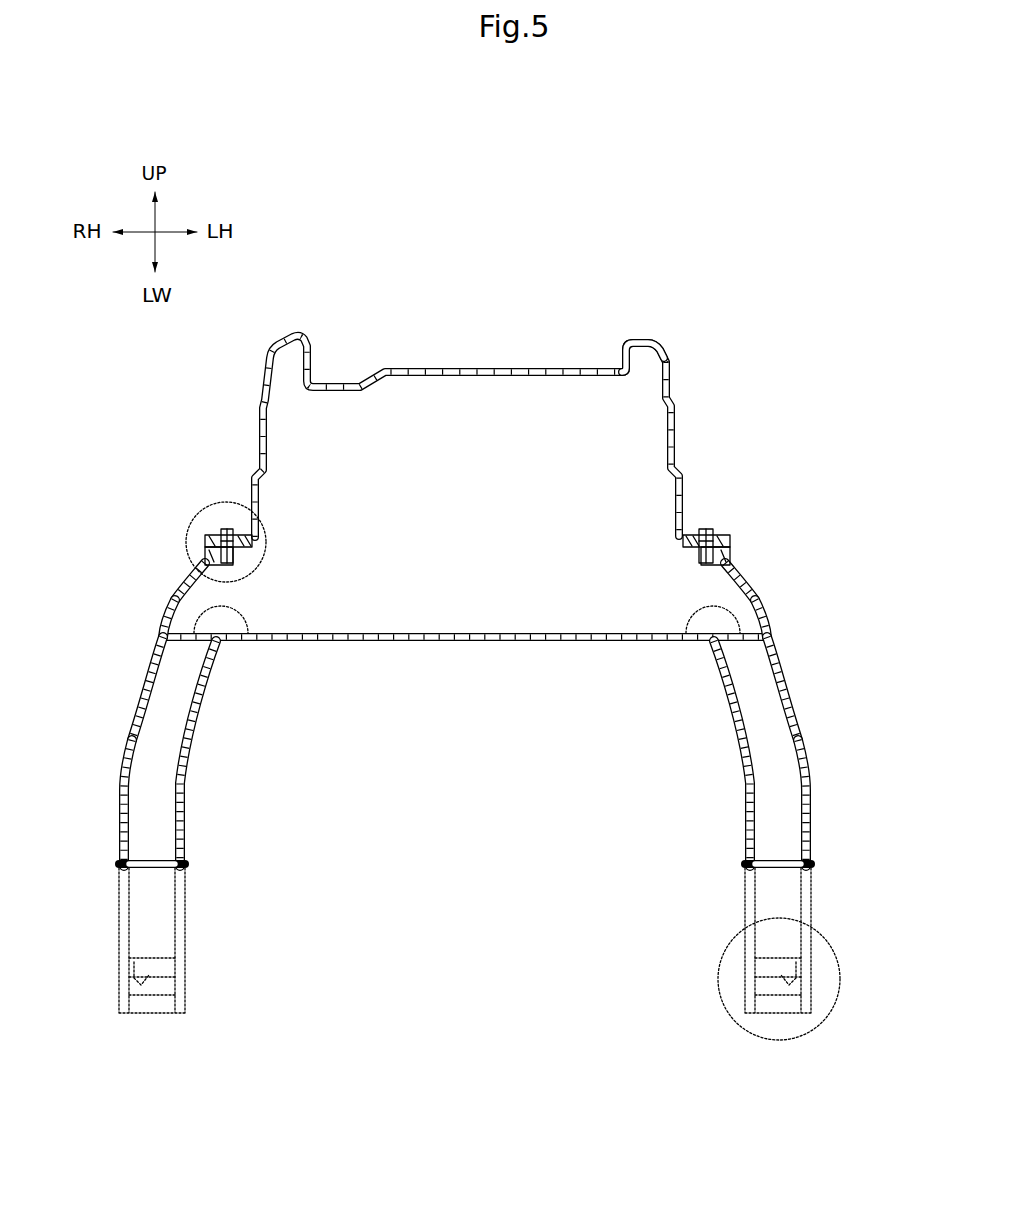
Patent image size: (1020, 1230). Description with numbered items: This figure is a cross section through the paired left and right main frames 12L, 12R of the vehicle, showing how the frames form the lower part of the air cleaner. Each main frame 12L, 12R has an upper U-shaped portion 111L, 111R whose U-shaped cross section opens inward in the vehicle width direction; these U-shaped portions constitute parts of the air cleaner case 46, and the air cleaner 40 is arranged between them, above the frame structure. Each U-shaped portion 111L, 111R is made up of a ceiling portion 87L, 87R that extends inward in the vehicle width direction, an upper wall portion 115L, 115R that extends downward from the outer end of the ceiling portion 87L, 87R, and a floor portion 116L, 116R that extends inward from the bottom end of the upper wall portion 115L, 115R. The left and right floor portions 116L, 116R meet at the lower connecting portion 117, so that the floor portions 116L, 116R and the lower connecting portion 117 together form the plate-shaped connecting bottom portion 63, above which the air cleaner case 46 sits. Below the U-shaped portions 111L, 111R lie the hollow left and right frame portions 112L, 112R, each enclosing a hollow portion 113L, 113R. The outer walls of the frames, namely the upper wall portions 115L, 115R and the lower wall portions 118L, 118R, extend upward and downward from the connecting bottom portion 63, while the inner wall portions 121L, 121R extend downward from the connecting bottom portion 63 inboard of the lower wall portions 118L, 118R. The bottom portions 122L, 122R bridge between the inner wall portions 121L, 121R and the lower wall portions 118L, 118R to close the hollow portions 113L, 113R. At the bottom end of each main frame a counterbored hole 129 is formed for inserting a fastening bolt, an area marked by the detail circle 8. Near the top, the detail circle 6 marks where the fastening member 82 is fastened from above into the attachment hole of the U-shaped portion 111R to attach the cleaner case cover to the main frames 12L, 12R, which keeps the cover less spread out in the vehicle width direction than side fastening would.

The air cleaner 40 is at (646, 334).
The air cleaner case 46 is at (657, 344).
The fastening member 82 is at (229, 528).
The right ceiling portion 87R is at (226, 534).
The left ceiling portion 87L is at (714, 534).
The detail circle of FIG. 6 is at (200, 522).
The detail circle of FIG. 8 is at (807, 1032).
The right U-shaped portion 111R is at (200, 575).
The left U-shaped portion 111L is at (733, 575).
The right upper wall portion 115R is at (148, 585).
The left upper wall portion 115L is at (782, 587).
The right main frame 12R is at (168, 773).
The left main frame 12L is at (761, 775).
The right frame portion 112R is at (152, 690).
The left frame portion 112L is at (787, 690).
The right hollow portion 113R is at (150, 750).
The left hollow portion 113L is at (787, 750).
The right inner wall portion 121R is at (185, 790).
The left inner wall portion 121L is at (746, 781).
The right bottom portion 122R is at (150, 868).
The left bottom portion 122L is at (766, 868).
The right lower wall portion 118R is at (124, 798).
The left lower wall portion 118L is at (807, 796).
The counterbored hole 129 is at (130, 990).
The right floor portion 116R is at (248, 633).
The left floor portion 116L is at (678, 652).
The lower connecting portion 117 is at (467, 644).
The connecting bottom portion 63 is at (465, 673).